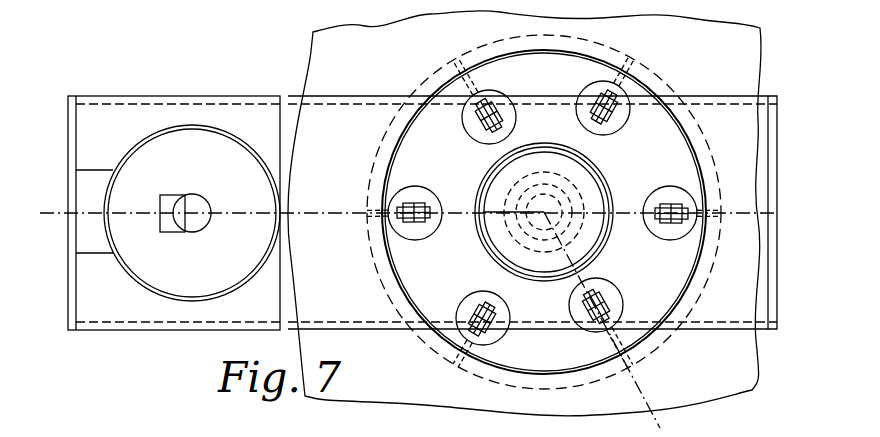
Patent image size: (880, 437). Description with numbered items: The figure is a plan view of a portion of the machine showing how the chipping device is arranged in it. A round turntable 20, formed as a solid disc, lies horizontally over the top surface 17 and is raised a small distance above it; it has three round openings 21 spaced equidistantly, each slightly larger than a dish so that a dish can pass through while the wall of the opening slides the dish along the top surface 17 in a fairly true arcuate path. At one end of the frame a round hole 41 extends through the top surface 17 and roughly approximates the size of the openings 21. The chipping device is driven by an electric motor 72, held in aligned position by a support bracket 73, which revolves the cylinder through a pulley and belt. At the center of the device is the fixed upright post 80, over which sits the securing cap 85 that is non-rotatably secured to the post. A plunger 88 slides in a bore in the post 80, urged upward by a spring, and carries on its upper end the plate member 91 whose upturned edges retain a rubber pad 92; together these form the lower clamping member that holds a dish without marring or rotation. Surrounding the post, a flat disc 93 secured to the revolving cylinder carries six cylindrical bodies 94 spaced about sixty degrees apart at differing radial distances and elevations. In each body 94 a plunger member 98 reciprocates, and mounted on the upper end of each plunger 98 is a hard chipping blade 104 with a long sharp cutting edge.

The top surface 17 is at (688, 307).
The turntable 20 is at (740, 358).
The openings 21 is at (699, 290).
The round hole 41 is at (703, 254).
The electric motor 72 is at (239, 275).
The support bracket 73 is at (69, 282).
The upright post 80 is at (560, 202).
The securing cap 85 is at (552, 173).
The plunger 88 is at (558, 192).
The plate member 91 is at (606, 229).
The rubber pad 92 is at (587, 236).
The disc 93 is at (677, 140).
The cylindrical body 94 is at (433, 189).
The plunger member 98 is at (498, 313).
The chipping blade 104 is at (496, 136).